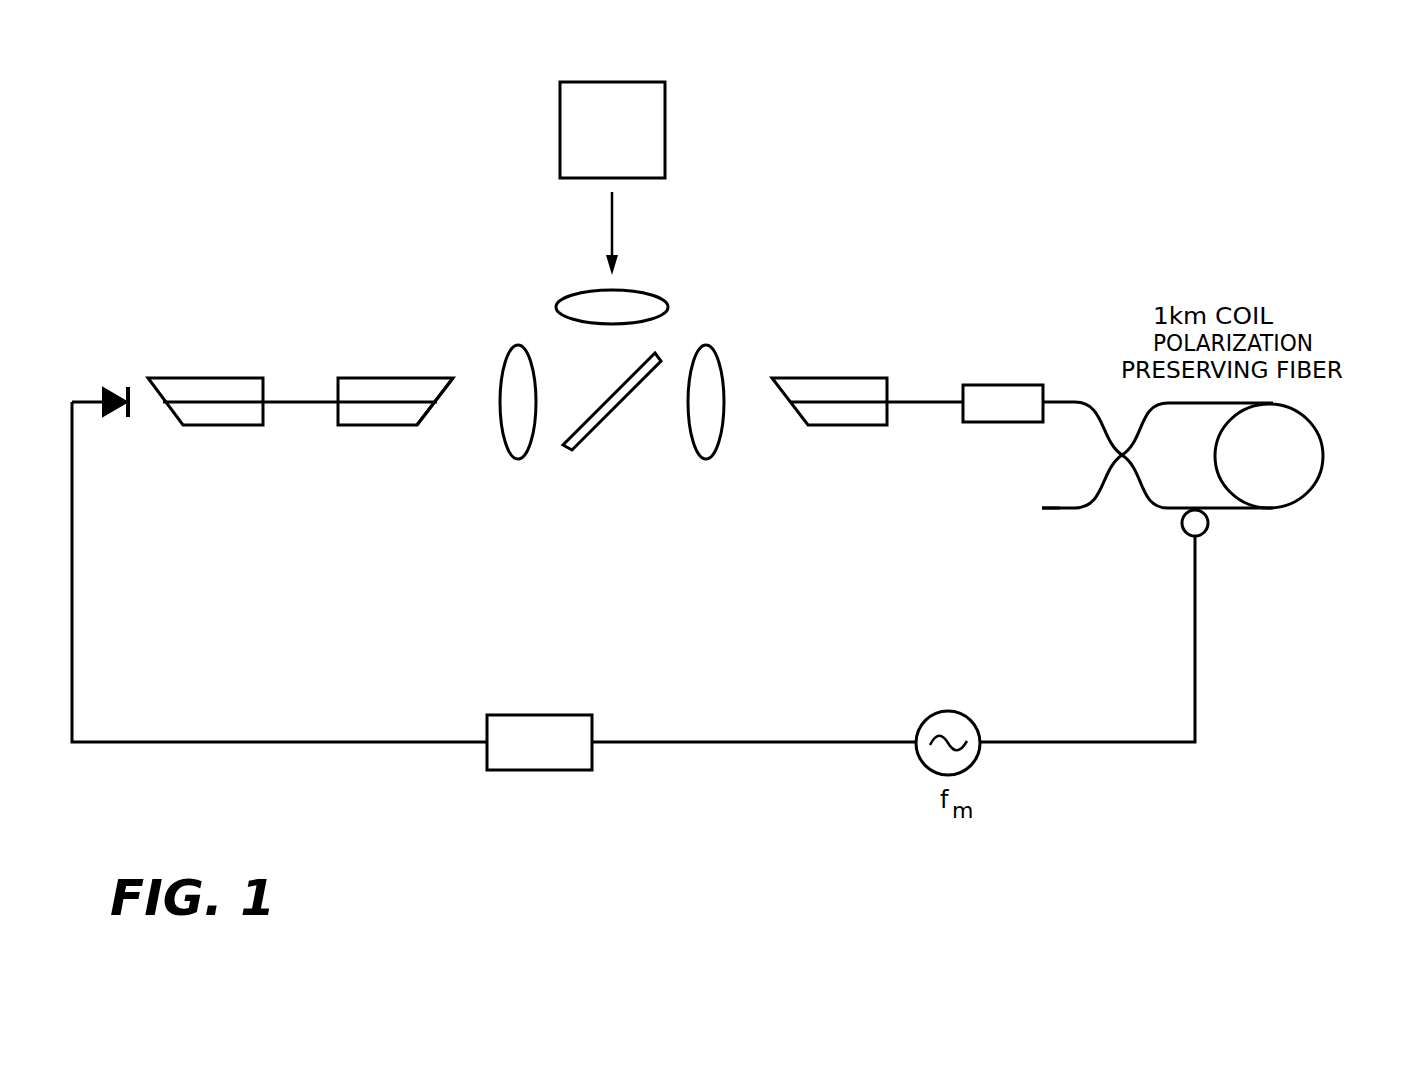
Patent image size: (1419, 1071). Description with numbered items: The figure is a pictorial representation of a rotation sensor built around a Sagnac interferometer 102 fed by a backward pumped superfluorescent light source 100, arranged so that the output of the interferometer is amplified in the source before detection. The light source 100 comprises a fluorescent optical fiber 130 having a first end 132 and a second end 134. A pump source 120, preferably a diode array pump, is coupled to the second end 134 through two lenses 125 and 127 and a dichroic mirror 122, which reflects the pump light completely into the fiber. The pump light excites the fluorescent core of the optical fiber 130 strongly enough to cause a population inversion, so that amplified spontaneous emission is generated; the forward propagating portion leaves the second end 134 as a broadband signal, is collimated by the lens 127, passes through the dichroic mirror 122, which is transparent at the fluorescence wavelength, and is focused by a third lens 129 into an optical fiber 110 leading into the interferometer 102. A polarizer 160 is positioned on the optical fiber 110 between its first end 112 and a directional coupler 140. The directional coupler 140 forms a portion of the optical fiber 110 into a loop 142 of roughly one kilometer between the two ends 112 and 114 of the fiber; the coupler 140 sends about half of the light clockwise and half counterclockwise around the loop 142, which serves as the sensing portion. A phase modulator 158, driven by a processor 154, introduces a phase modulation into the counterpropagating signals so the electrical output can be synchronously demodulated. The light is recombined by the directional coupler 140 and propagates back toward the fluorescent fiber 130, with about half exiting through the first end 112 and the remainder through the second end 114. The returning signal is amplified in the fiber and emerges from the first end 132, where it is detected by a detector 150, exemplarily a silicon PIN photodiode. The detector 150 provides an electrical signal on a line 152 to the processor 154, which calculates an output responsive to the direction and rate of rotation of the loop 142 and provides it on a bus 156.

The light source 100 is at (281, 453).
The Sagnac interferometer 102 is at (930, 362).
The optical fiber 110 is at (933, 405).
The first end of optical fiber 110 112 is at (828, 378).
The second end of optical fiber 110 114 is at (1057, 510).
The pump source 120 is at (665, 128).
The dichroic mirror 122 is at (612, 412).
The lens 125 is at (630, 291).
The lens 127 is at (503, 412).
The third lens 129 is at (718, 425).
The optical fiber 130 is at (302, 402).
The first end 132 is at (165, 404).
The second end 134 is at (432, 405).
The directional coupler 140 is at (1122, 455).
The loop 142 is at (1322, 440).
The detector 150 is at (84, 403).
The line 152 is at (195, 741).
The processor 154 is at (537, 714).
The bus 156 is at (1108, 744).
The phase modulator 158 is at (1268, 510).
The polarizer 160 is at (1000, 410).